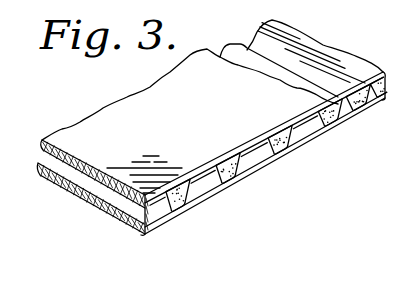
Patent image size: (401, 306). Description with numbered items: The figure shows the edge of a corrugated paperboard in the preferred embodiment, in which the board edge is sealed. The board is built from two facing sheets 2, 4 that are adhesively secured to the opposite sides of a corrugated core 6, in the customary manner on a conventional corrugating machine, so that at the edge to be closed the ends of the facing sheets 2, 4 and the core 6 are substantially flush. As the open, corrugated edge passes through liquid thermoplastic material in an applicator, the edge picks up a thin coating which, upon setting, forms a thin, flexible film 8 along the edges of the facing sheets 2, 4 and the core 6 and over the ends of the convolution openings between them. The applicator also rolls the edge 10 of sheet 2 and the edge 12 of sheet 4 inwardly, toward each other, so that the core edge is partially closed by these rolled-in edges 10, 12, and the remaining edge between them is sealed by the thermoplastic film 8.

The facing sheet 2 is at (144, 87).
The facing sheet 4 is at (84, 202).
The corrugated core 6 is at (72, 168).
The thin flexible film 8 is at (283, 155).
The edge of sheet 2 10 is at (203, 185).
The edge of sheet 4 12 is at (232, 180).